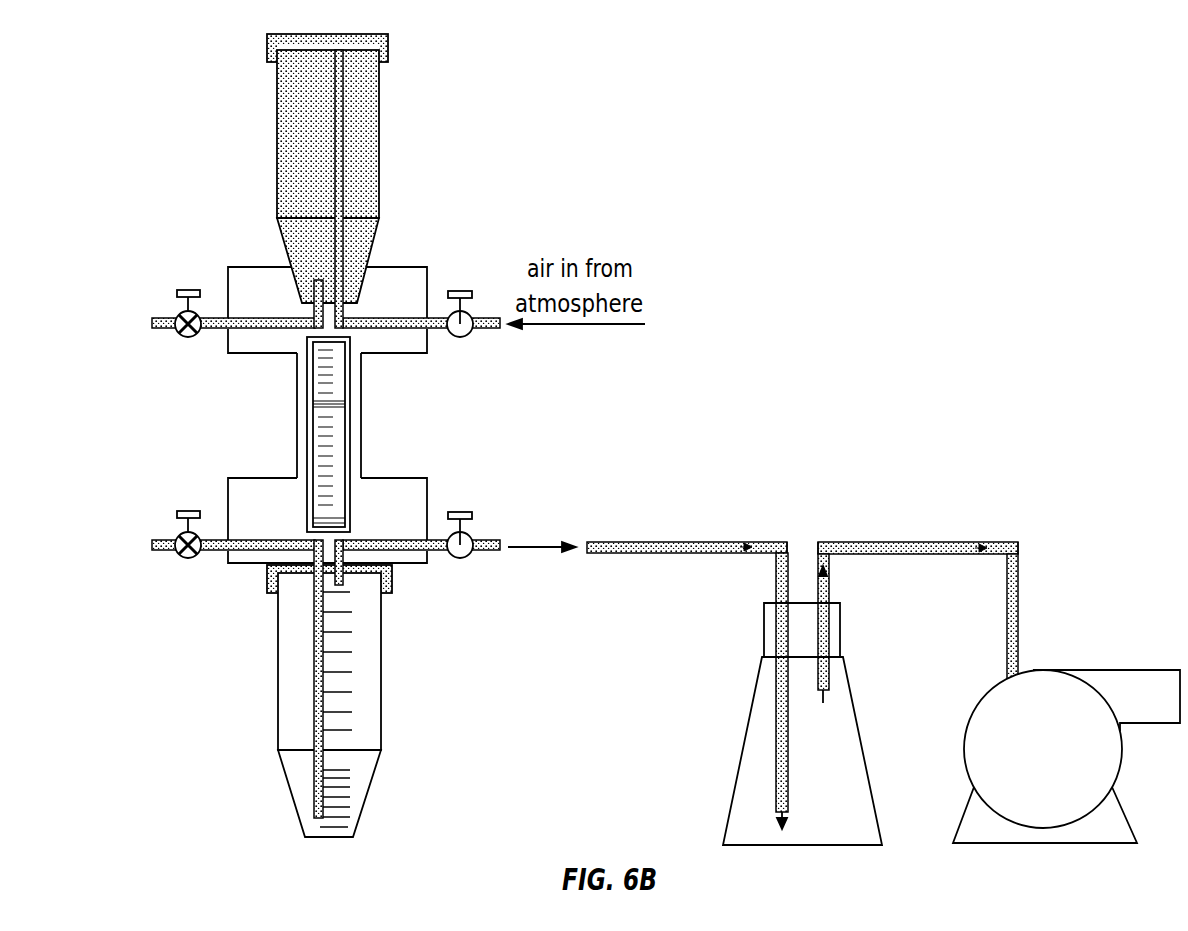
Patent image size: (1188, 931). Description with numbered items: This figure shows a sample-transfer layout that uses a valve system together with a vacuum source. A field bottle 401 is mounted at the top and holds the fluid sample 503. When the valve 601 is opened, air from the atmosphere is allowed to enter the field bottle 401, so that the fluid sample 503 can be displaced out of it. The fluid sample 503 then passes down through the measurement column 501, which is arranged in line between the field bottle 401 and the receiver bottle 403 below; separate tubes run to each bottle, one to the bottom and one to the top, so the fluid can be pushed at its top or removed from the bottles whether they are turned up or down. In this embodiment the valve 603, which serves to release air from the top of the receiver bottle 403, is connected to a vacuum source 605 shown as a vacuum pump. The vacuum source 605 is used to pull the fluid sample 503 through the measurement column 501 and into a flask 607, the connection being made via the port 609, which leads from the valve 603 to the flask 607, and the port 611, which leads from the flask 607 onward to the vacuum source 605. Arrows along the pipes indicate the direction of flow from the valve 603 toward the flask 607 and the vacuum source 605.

The field bottle 401 is at (268, 45).
The fluid sample 503 is at (292, 153).
The measurement column 501 is at (297, 423).
The receiver bottle 403 is at (277, 658).
The valve 601 is at (470, 335).
The valve 603 is at (470, 556).
The port 609 is at (673, 542).
The port 611 is at (915, 542).
The flask 607 is at (740, 762).
The vacuum source 605 is at (1092, 670).